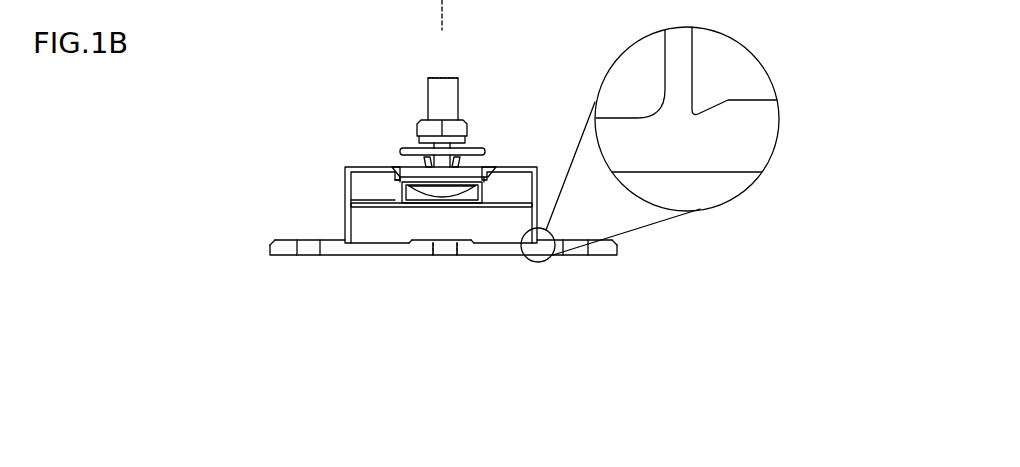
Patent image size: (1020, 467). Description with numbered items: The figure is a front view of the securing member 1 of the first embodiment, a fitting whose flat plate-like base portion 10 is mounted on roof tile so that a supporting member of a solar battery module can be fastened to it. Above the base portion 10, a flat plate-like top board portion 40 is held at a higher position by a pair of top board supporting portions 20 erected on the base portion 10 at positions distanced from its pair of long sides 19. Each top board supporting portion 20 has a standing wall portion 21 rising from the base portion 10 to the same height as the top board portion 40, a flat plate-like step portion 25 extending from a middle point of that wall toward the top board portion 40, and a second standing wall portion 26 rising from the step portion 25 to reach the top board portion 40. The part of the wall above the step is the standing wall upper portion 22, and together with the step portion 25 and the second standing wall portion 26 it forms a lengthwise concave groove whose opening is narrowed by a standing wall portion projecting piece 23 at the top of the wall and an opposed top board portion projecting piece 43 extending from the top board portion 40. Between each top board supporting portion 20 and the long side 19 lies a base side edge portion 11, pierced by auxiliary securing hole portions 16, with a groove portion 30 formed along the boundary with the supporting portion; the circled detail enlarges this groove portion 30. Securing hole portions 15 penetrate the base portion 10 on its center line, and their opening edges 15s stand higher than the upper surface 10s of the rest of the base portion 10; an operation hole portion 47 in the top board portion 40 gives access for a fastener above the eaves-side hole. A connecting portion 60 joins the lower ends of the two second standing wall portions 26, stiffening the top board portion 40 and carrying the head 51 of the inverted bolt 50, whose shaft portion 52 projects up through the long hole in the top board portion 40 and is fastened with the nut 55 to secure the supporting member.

The securing member 1 is at (185, 134).
The base portion 10 is at (372, 258).
The upper surface 10s is at (395, 230).
The base side edge portion 11 is at (290, 240).
The securing hole portion 15 is at (487, 0).
The opening edge 15s is at (428, 240).
The auxiliary securing hole portion 16 is at (298, 256).
The long side 19 is at (270, 250).
The top board supporting portion 20 is at (334, 155).
The standing wall portion 21 is at (350, 222).
The standing wall upper portion 22 is at (345, 183).
The standing wall portion projecting piece 23 is at (535, 166).
The step portion 25 is at (380, 198).
The second standing wall portion 26 is at (393, 187).
The groove portion 30 is at (697, 113).
The top board portion 40 is at (469, 160).
The top board portion projecting piece 43 is at (498, 167).
The operation hole portion 47 is at (364, 0).
The bolt 50 is at (444, 77).
The head 51 is at (463, 203).
The shaft portion 52 is at (461, 96).
The nut 55 is at (417, 127).
The connecting portion 60 is at (471, 202).